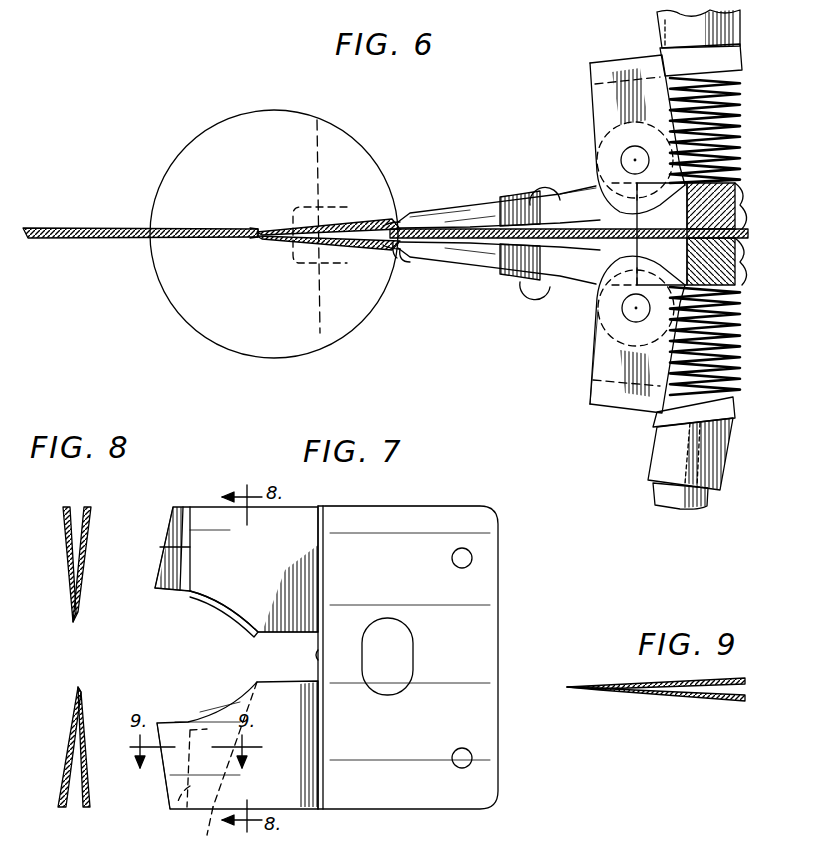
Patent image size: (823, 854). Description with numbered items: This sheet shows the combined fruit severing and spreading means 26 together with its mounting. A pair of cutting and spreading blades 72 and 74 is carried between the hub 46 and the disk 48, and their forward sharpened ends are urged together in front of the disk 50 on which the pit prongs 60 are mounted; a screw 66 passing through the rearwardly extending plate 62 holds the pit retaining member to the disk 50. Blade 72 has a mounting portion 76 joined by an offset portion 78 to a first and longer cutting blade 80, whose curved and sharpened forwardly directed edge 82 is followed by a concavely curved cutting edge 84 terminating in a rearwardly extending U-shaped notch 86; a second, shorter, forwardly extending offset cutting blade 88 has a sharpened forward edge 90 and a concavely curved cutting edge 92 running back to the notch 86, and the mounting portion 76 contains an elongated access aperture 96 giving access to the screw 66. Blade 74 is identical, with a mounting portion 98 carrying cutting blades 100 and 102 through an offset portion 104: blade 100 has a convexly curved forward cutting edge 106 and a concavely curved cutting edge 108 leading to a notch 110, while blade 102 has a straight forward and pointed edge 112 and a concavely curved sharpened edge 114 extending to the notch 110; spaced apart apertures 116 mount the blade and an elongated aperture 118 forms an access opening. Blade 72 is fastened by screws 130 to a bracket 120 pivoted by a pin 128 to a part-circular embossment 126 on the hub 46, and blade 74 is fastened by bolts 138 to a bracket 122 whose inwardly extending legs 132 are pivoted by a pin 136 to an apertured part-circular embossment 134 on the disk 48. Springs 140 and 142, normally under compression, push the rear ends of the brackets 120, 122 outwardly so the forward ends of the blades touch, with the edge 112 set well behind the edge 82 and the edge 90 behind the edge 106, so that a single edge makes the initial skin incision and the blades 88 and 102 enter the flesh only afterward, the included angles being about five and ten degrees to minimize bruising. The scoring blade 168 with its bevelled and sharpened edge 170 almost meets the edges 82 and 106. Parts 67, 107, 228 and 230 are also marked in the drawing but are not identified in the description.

In FIG. 6, the combined fruit severing and spreading means 26 is at (524, 123).
In FIG. 6, the hub 46 is at (745, 205).
In FIG. 6, the disk 48 is at (745, 258).
In FIG. 6, the disk 50 is at (462, 250).
In FIG. 6, the pit prongs 60 is at (318, 135).
In FIG. 6, the rearwardly extending plate 62 is at (440, 218).
In FIG. 6, the screw 66 is at (460, 212).
In FIG. 6, the lower jaw tip 67 is at (395, 255).
In FIG. 6, the cutting and spreading blade 72 is at (428, 207).
In FIG. 7, the cutting and spreading blade 72 is at (168, 508).
In FIG. 6, the combined fruit severing and spreader blade 74 is at (462, 270).
In FIG. 7, the combined fruit severing and spreader blade 74 is at (378, 538).
In FIG. 6, the mounting portion 76 is at (497, 205).
In FIG. 6, the offset portion 78 is at (405, 218).
In FIG. 6, the first and longer cutting blade 80 is at (355, 225).
In FIG. 7, the first and longer cutting blade 80 is at (190, 520).
In FIG. 8, the first and longer cutting blade 80 is at (88, 570).
In FIG. 7, the curved and sharpened forwardly directed edge 82 is at (162, 549).
In FIG. 7, the second sharpened and concavely curved cutting edge 84 is at (170, 593).
In FIG. 7, the rearwardly extending U-shaped notch 86 is at (262, 636).
In FIG. 7, the second forwardly extending offset cutting blade 88 is at (211, 830).
In FIG. 8, the second forwardly extending offset cutting blade 88 is at (87, 755).
In FIG. 9, the second forwardly extending offset cutting blade 88 is at (660, 682).
In FIG. 7, the forward edge 90 is at (185, 812).
In FIG. 9, the forward edge 90 is at (607, 684).
In FIG. 7, the concavely curved cutting edge 92 is at (233, 700).
In FIG. 8, the concavely curved cutting edge 92 is at (80, 705).
In FIG. 6, the elongated access aperture 96 is at (505, 252).
In FIG. 6, the mounting portion 98 is at (520, 273).
In FIG. 7, the mounting portion 98 is at (408, 752).
In FIG. 7, the cutting blade 100 is at (283, 787).
In FIG. 8, the cutting blade 100 is at (66, 766).
In FIG. 9, the cutting blade 100 is at (626, 693).
In FIG. 6, the cutting blade 102 is at (355, 265).
In FIG. 7, the cutting blade 102 is at (266, 560).
In FIG. 8, the cutting blade 102 is at (66, 572).
In FIG. 7, the offset portion 104 is at (318, 505).
In FIG. 7, the convexly curved forward cutting edge 106 is at (165, 782).
In FIG. 9, the convexly curved forward cutting edge 106 is at (565, 686).
In FIG. 6, the lower jaw tip surface 107 is at (408, 258).
In FIG. 7, the concavely curved cutting edge 108 is at (207, 720).
In FIG. 8, the concavely curved cutting edge 108 is at (78, 690).
In FIG. 7, the notch 110 is at (318, 658).
In FIG. 7, the straight forward and pointed edge 112 is at (165, 535).
In FIG. 7, the concavely curved sharpened edge 114 is at (222, 615).
In FIG. 7, the spaced apart apertures 116 is at (468, 755).
In FIG. 7, the elongated aperture 118 is at (412, 655).
In FIG. 6, the bracket 120 is at (600, 100).
In FIG. 6, the bracket 122 is at (628, 398).
In FIG. 6, the part-circular embossment 126 is at (597, 170).
In FIG. 6, the pin 128 is at (622, 155).
In FIG. 6, the screws 130 is at (550, 192).
In FIG. 6, the inwardly extending legs 132 is at (597, 370).
In FIG. 6, the apertured part-circular embossment 134 is at (598, 310).
In FIG. 6, the pin 136 is at (624, 314).
In FIG. 6, the bolts 138 is at (538, 295).
In FIG. 6, the spring 140 is at (742, 110).
In FIG. 6, the spring 142 is at (742, 332).
In FIG. 6, the blade 168 is at (97, 238).
In FIG. 6, the bevelled and sharpened edge 170 is at (258, 230).
In FIG. 6, the adjusting screw 228 is at (665, 31).
In FIG. 6, the lock nut 230 is at (668, 497).